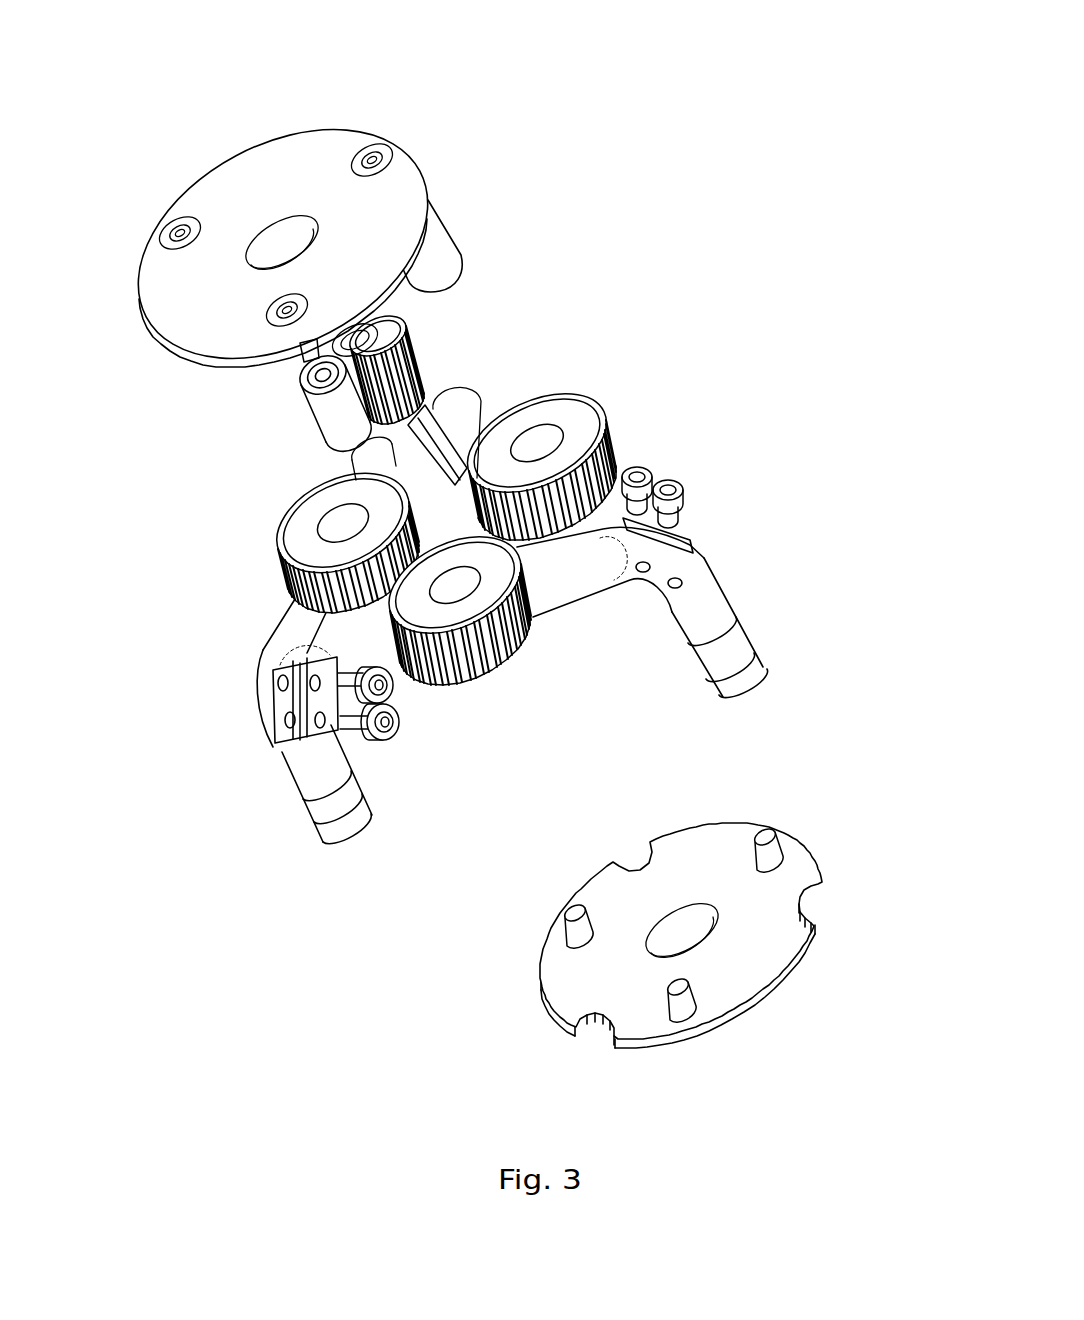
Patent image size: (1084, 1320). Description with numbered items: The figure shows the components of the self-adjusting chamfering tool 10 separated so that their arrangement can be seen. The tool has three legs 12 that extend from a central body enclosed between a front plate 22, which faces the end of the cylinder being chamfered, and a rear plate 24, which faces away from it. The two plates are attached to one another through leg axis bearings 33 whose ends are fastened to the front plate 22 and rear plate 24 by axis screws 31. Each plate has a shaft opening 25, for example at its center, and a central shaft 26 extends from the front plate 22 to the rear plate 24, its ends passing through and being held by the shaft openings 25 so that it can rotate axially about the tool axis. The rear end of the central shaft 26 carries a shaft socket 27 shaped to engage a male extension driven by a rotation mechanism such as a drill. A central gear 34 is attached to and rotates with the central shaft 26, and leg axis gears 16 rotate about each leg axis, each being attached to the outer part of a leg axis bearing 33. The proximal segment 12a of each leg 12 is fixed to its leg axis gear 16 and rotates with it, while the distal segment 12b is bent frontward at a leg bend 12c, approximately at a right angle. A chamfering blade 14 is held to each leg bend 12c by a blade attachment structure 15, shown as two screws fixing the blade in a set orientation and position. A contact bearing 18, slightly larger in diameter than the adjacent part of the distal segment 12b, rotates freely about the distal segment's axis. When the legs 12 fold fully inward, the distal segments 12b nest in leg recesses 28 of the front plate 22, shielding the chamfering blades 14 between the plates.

The chamfering tool 10 is at (692, 203).
The leg 12 is at (236, 716).
The proximal segment 12a is at (283, 604).
The distal segment 12b is at (282, 765).
The leg bend 12c is at (258, 675).
The chamfering blade 14 is at (437, 428).
The blade attachment structure 15 is at (686, 500).
The leg axis gear 16 is at (594, 403).
The contact bearing 18 is at (310, 820).
The front plate 22 is at (768, 990).
The rear plate 24 is at (248, 148).
The shaft opening 25 is at (265, 265).
The central shaft 26 is at (402, 443).
The shaft socket 27 is at (347, 338).
The leg recess 28 is at (812, 917).
The axis screw 31 is at (775, 840).
The leg axis bearing 33 is at (445, 238).
The central gear 34 is at (412, 350).